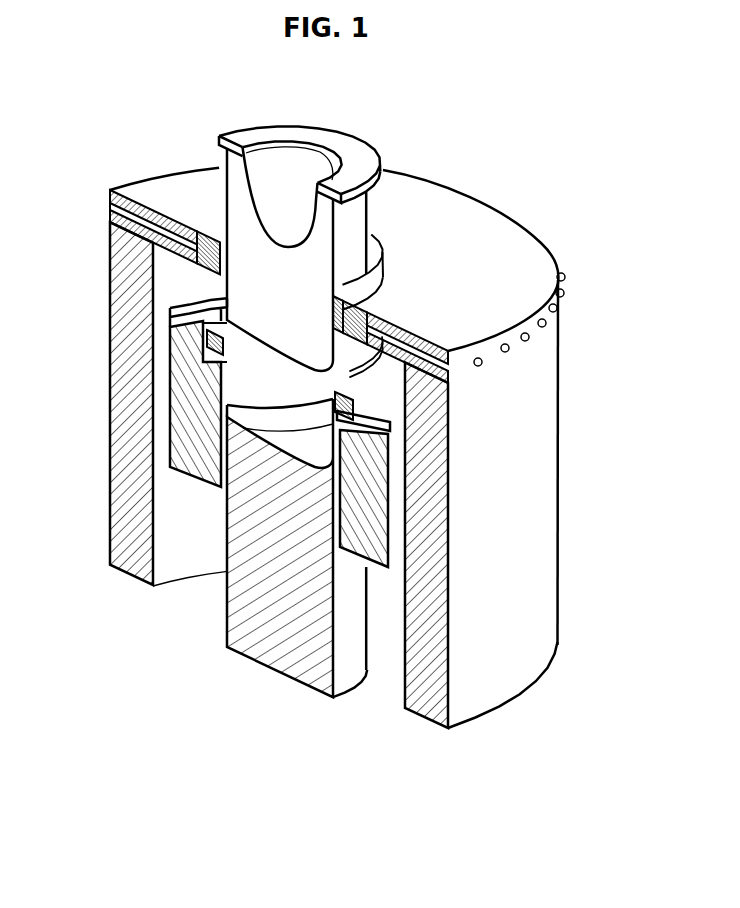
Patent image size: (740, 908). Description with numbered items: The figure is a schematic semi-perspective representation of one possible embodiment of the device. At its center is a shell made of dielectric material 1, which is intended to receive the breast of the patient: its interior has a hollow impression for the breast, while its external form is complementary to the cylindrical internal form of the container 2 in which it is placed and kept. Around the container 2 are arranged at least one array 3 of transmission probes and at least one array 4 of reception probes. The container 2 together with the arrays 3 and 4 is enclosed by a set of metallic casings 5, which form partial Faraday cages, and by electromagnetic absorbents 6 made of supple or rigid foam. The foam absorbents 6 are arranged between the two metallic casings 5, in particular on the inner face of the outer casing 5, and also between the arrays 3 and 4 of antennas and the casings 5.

The shell made of dielectric material 1 is at (358, 158).
The container 2 is at (250, 383).
The array of transmission probes 3 is at (215, 340).
The array of reception probes 4 is at (352, 330).
The metallic casings 5 is at (401, 497).
The electromagnetic absorbents 6 is at (362, 513).